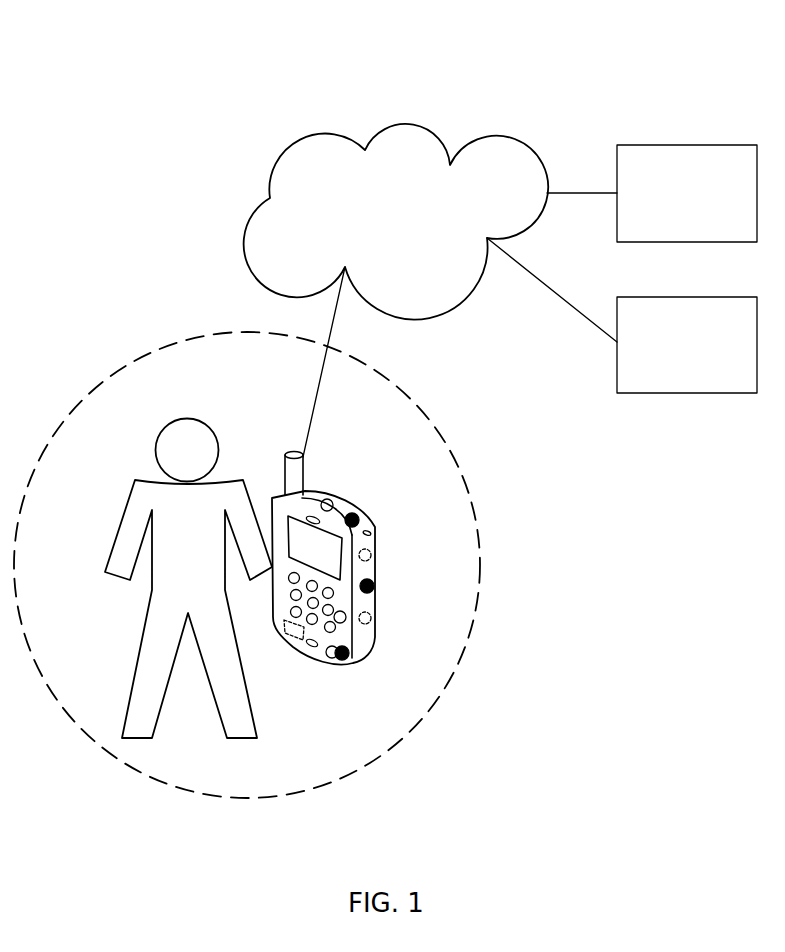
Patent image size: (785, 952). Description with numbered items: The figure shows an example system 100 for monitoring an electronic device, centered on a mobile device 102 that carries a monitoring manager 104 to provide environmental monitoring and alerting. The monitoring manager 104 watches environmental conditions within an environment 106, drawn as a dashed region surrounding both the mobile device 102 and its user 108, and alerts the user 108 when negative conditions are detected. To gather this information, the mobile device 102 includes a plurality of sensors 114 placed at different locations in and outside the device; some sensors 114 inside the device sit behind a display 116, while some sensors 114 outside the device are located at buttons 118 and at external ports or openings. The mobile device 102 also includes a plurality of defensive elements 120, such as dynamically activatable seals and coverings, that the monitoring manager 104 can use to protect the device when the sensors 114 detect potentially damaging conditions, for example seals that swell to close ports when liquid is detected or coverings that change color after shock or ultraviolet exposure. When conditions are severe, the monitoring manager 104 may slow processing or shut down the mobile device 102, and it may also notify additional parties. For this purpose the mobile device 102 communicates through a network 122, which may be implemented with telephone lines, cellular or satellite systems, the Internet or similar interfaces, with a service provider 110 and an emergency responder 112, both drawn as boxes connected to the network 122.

The system 100 is at (148, 47).
The mobile device 102 is at (348, 564).
The monitoring manager 104 is at (296, 632).
The environment 106 is at (410, 398).
The user 108 is at (187, 420).
The service provider 110 is at (687, 193).
The emergency responder 112 is at (687, 345).
The sensors 114 is at (329, 503).
The display 116 is at (315, 550).
The buttons 118 is at (328, 595).
The defensive elements 120 is at (356, 516).
The network 122 is at (407, 125).